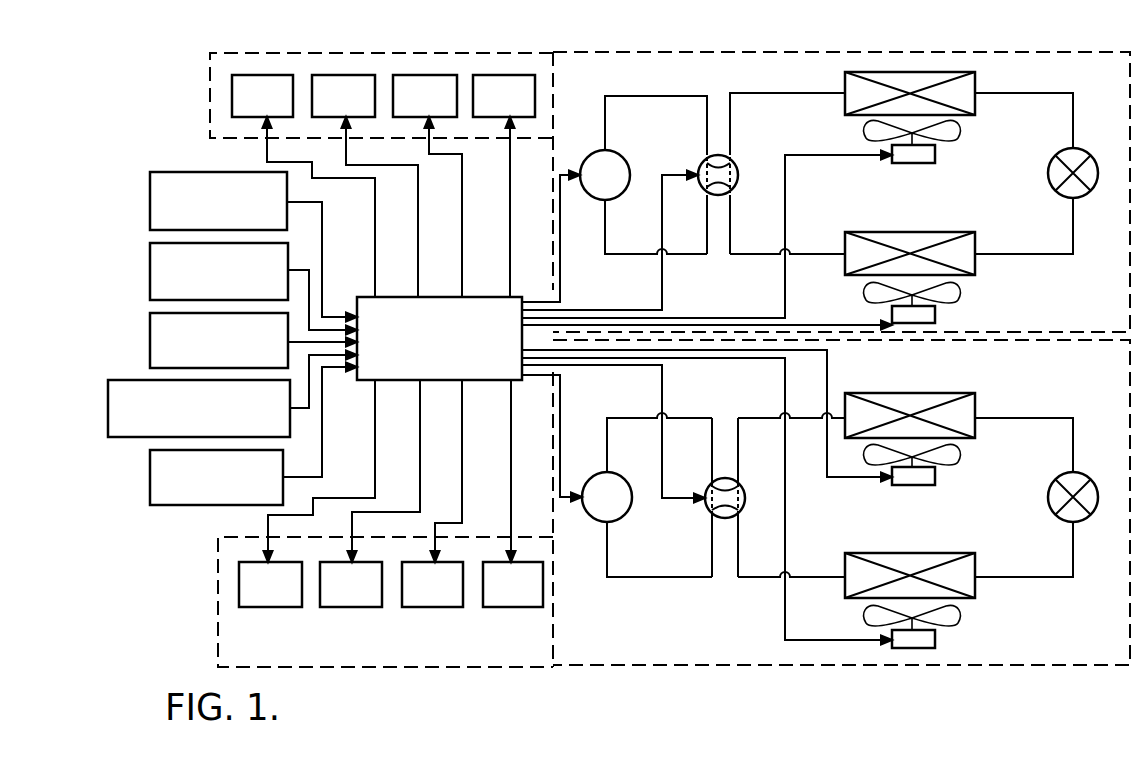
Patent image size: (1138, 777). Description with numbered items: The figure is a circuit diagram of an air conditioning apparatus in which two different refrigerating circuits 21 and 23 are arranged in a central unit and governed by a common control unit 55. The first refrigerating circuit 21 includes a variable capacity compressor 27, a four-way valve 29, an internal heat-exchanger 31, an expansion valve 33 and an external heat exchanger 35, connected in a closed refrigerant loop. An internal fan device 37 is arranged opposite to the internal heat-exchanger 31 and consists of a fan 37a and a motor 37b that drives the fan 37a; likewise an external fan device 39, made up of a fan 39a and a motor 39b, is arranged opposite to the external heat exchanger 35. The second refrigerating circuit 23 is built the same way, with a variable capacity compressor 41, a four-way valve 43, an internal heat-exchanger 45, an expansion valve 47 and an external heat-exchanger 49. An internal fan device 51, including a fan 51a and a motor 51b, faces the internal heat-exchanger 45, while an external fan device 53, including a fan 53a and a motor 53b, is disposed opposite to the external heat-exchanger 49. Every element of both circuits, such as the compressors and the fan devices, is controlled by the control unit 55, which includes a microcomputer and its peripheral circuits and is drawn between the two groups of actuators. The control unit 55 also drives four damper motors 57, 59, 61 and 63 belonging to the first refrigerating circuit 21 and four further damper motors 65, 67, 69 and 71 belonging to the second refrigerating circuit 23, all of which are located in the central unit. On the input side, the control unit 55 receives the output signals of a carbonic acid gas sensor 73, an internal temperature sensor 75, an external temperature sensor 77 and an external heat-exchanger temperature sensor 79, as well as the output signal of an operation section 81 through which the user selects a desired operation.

The refrigerating circuit 21 is at (667, 52).
The refrigerating circuit 23 is at (722, 668).
The variable capacity compressor 27 is at (598, 155).
The four-way valve 29 is at (702, 160).
The internal heat-exchanger 31 is at (935, 72).
The expansion valve 33 is at (1088, 157).
The external heat exchanger 35 is at (968, 265).
The internal fan device 37 is at (936, 164).
The fan 37a is at (956, 133).
The motor 37b is at (925, 152).
The external fan device 39 is at (915, 307).
The fan 39a is at (955, 296).
The motor 39b is at (935, 315).
The variable capacity compressor 41 is at (597, 522).
The four-way valve 43 is at (707, 510).
The internal heat-exchanger 45 is at (962, 393).
The expansion valve 47 is at (1088, 482).
The external heat-exchanger 49 is at (975, 565).
The internal fan device 51 is at (940, 489).
The fan 51a is at (955, 457).
The motor 51b is at (932, 478).
The external fan device 53 is at (948, 653).
The fan 53a is at (955, 618).
The motor 53b is at (935, 642).
The control unit 55 is at (487, 380).
The damper motor 57 is at (266, 75).
The damper motor 59 is at (346, 75).
The damper motor 61 is at (427, 75).
The damper motor 63 is at (507, 75).
The damper motor 65 is at (282, 607).
The damper motor 67 is at (355, 607).
The damper motor 69 is at (427, 607).
The damper motor 71 is at (512, 607).
The CO2 density sensor 73 is at (150, 203).
The internal temperature sensor 75 is at (150, 272).
The external temperature sensor 77 is at (150, 338).
The external heat-exchanger temperature sensor 79 is at (125, 420).
The operation section 81 is at (150, 481).